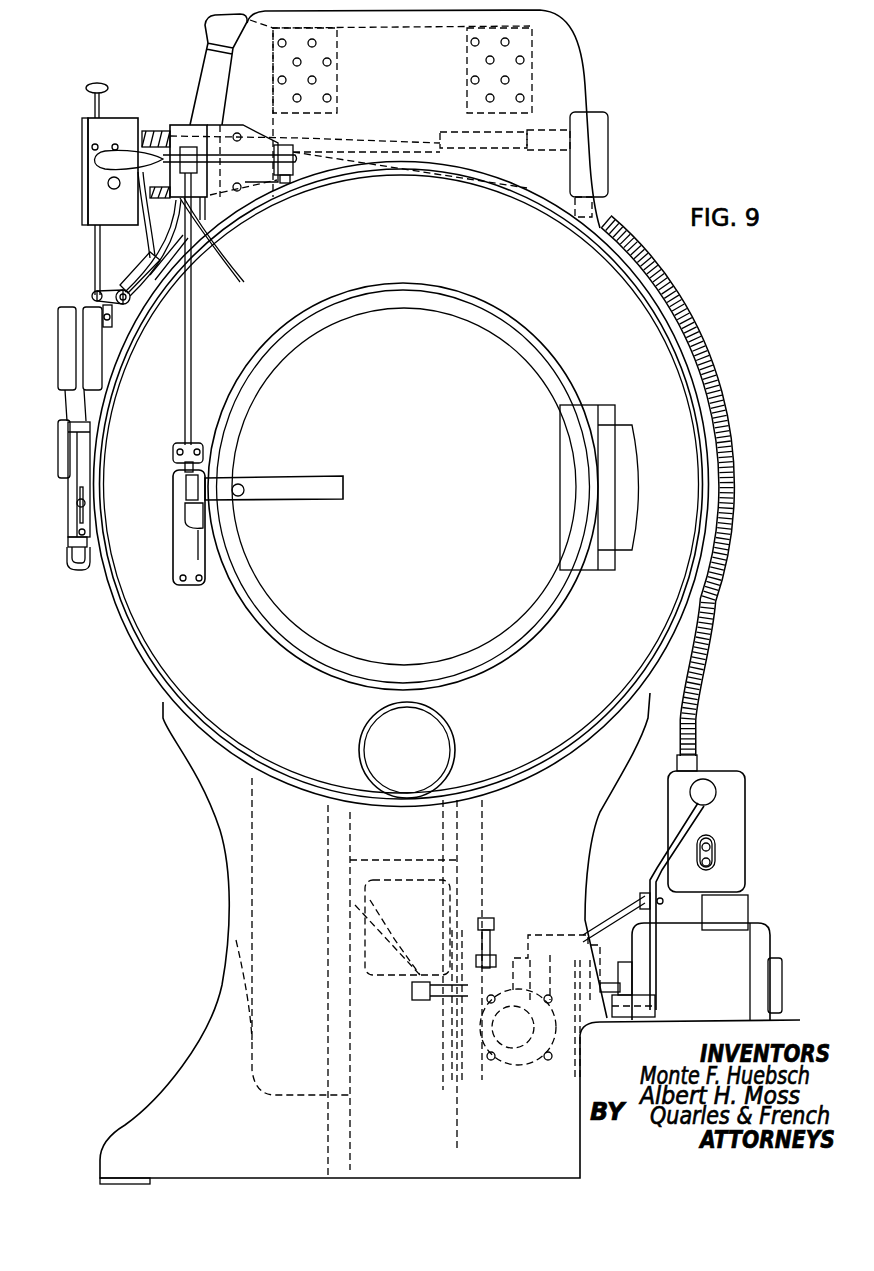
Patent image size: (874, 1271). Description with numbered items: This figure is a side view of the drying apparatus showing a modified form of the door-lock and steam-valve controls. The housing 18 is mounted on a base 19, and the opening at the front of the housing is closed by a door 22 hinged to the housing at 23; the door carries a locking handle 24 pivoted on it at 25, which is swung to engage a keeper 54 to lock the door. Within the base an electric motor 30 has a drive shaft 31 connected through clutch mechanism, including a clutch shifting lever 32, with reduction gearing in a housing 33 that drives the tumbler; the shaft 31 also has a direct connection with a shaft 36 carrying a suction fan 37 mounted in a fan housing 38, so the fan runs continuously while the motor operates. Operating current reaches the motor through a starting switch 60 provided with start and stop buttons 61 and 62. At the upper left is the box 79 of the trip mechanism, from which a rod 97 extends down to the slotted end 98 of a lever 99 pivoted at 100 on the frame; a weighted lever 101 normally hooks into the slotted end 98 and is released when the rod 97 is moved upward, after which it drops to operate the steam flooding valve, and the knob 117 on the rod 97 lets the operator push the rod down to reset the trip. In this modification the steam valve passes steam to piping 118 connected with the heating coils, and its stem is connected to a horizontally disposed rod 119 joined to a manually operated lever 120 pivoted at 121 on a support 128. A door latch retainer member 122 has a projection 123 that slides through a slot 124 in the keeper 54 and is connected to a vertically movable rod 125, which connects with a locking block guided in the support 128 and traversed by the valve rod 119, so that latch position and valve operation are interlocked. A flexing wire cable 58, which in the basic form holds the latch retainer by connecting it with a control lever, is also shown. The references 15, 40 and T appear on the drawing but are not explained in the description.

The section line 15 is at (173, 417).
The housing 18 is at (163, 672).
The base 19 is at (190, 752).
The door 22 is at (560, 375).
The hinge 23 is at (612, 420).
The locking handle 24 is at (305, 480).
The pivot 25 is at (242, 484).
The electric motor 30 is at (755, 925).
The drive shaft 31 is at (618, 978).
The clutch shifting lever 32 is at (663, 860).
The reduction gearing housing 33 is at (517, 1065).
The shaft 36 is at (420, 998).
The suction fan 37 is at (415, 935).
The fan housing 38 is at (355, 880).
The top housing 40 is at (582, 70).
The keeper 54 is at (180, 540).
The flexing wire cable 58 is at (180, 310).
The starting switch 60 is at (718, 770).
The start button 61 is at (715, 845).
The stop button 62 is at (716, 862).
The box 79 is at (82, 165).
The rod 97 is at (95, 258).
The slotted end 98 is at (97, 296).
The lever 99 is at (123, 292).
The pivot 100 is at (95, 338).
The weighted lever 101 is at (70, 363).
The knob 117 is at (93, 92).
The piping 118 is at (207, 58).
The valve rod 119 is at (183, 145).
The manually operated lever 120 is at (150, 152).
The pivot 121 is at (284, 178).
The door latch retainer member 122 is at (185, 512).
The projection 123 is at (185, 468).
The slot 124 is at (186, 485).
The vertically movable rod 125 is at (167, 318).
The support 128 is at (241, 192).
The thermostat T is at (603, 152).